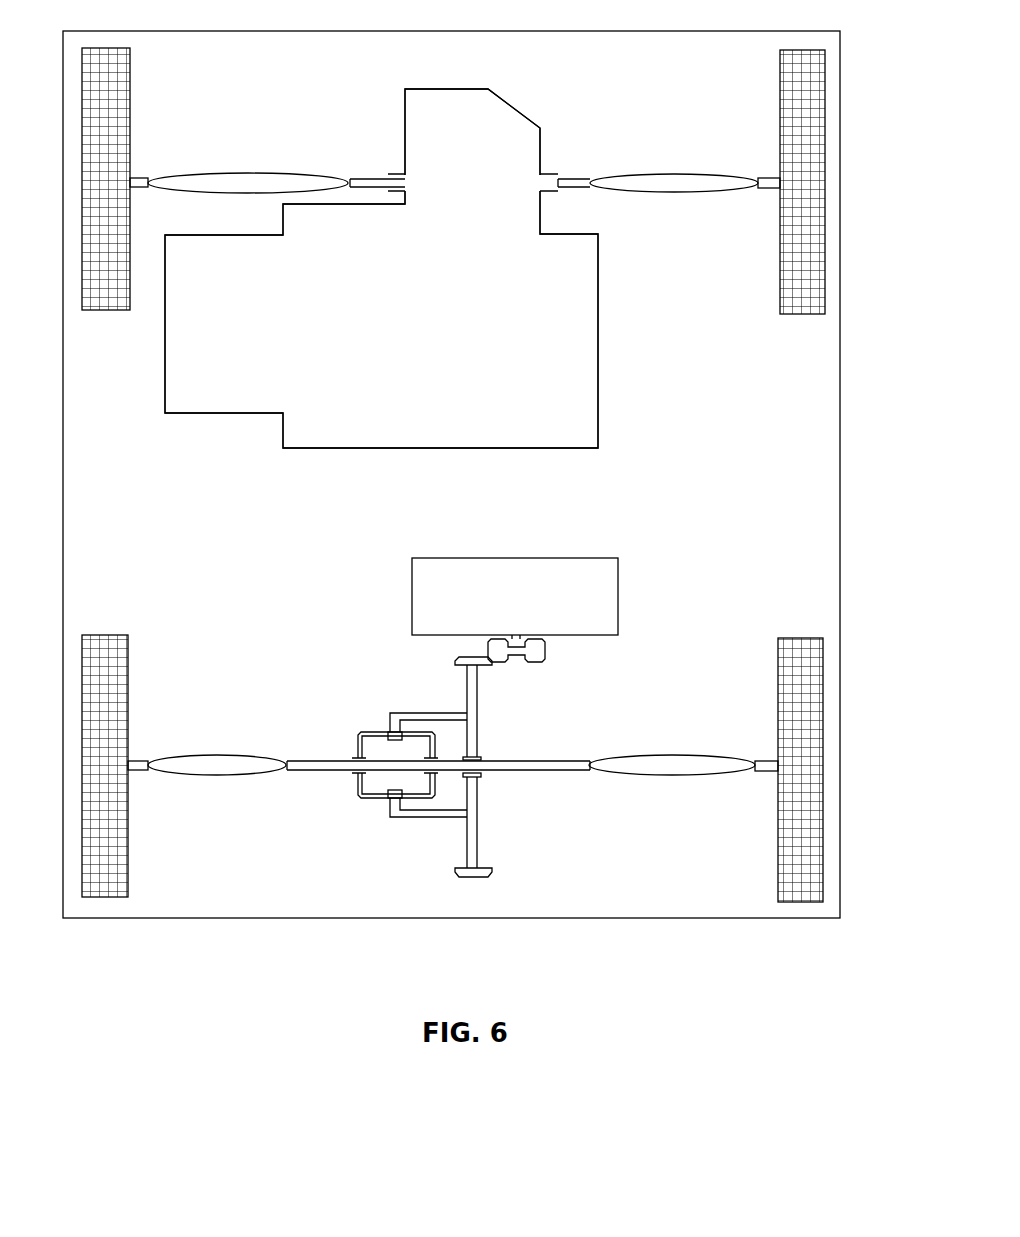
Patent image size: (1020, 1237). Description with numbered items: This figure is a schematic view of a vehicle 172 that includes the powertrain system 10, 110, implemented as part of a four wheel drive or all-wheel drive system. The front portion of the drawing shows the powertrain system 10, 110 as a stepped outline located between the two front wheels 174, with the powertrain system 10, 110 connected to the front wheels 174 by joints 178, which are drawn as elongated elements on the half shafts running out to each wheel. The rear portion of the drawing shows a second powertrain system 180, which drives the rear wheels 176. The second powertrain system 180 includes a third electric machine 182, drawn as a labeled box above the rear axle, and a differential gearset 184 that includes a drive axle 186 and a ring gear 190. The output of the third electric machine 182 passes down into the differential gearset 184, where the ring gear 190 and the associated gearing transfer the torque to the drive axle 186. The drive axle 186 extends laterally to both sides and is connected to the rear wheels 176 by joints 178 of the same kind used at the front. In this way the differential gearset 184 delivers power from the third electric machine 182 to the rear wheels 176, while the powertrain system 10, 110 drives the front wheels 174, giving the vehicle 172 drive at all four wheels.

The powertrain system 10 is at (518, 448).
The powertrain system 110 is at (381, 268).
The vehicle 172 is at (840, 882).
The front wheels 174 is at (105, 318).
The rear wheels 176 is at (104, 648).
The joints 178 is at (222, 182).
The second powertrain system 180 is at (273, 619).
The third electric machine 182 is at (619, 592).
The differential gearset 184 is at (414, 702).
The drive axle 186 is at (327, 765).
The ring gear 190 is at (457, 859).